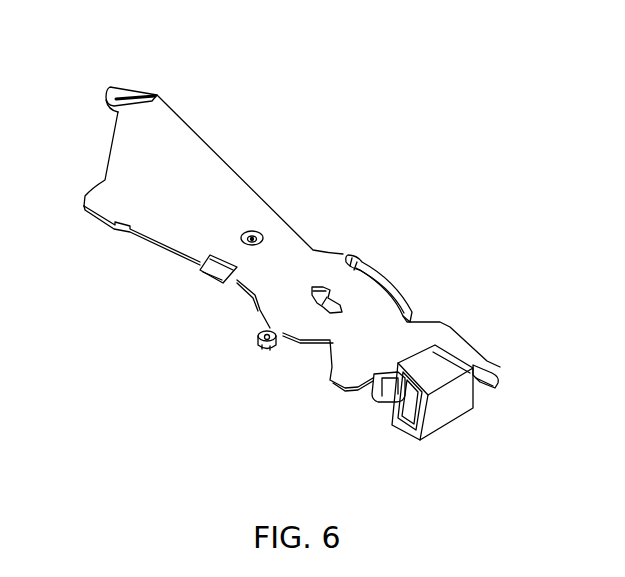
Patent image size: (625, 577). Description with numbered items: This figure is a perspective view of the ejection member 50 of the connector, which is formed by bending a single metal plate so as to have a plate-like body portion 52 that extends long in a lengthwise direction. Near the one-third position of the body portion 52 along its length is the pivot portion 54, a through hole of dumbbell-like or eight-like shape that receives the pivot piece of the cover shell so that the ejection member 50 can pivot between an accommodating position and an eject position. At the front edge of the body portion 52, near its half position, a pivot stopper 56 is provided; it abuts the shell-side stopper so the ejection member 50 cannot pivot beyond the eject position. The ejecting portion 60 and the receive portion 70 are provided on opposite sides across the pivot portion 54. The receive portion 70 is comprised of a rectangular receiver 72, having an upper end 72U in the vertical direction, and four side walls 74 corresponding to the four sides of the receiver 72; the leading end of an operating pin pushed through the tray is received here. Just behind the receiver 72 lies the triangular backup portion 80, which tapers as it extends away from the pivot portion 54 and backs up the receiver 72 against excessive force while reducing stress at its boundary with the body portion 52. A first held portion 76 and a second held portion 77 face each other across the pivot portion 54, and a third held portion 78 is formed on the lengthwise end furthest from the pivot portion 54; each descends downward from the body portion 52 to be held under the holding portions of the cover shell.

The ejection member 50 is at (343, 104).
The body portion 52 is at (178, 118).
The pivot portion 54 is at (327, 287).
The pivot stopper 56 is at (210, 275).
The ejecting portion 60 is at (97, 220).
The receive portion 70 is at (473, 417).
The receiver 72 is at (400, 375).
The upper end of the receiver 72U is at (453, 347).
The side walls 74 is at (440, 418).
The first held portion 76 is at (380, 272).
The second held portion 77 is at (258, 352).
The third held portion 78 is at (122, 90).
The backup portion 80 is at (497, 373).